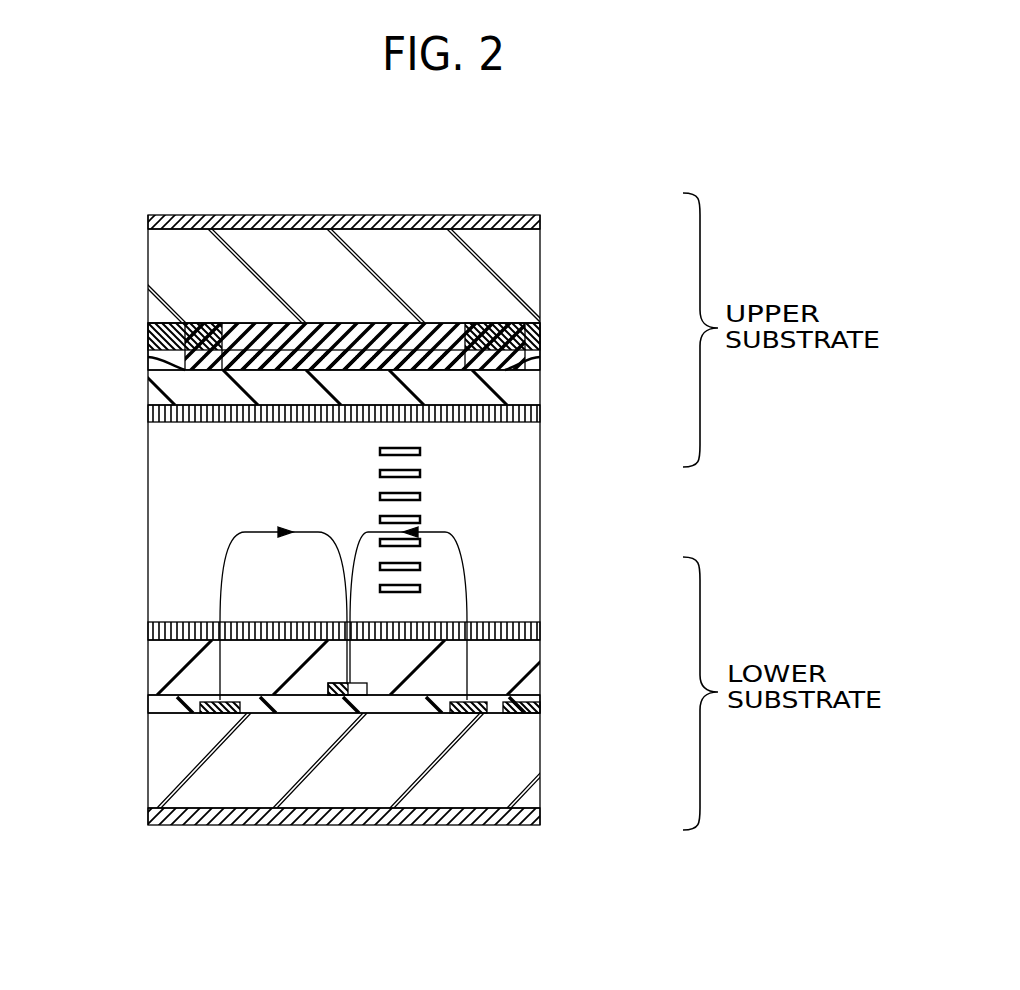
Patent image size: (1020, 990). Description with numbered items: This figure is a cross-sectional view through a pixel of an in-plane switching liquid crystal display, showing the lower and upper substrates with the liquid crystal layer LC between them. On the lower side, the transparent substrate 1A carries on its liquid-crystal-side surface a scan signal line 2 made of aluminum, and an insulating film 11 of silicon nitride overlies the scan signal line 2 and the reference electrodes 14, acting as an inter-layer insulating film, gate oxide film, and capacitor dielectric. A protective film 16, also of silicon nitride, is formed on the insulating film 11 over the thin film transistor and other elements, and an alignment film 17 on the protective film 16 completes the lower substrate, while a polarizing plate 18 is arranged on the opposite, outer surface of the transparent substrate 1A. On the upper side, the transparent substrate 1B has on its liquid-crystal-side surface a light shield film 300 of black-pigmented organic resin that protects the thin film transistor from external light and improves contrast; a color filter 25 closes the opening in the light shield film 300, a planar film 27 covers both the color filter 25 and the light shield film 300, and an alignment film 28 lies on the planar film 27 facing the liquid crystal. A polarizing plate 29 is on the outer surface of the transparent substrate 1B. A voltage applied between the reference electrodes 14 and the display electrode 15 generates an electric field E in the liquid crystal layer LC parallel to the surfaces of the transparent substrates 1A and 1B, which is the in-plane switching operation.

The polarizing plate 29 is at (190, 214).
The color filter 25 is at (440, 330).
The transparent substrate 1B is at (540, 259).
The light shield film 300 is at (147, 345).
The planar film 27 is at (540, 383).
The alignment film 28 is at (540, 433).
The liquid crystal layer LC is at (540, 500).
The electric field E is at (414, 531).
The alignment film 17 is at (540, 605).
The protective film 16 is at (540, 650).
The scan signal line 2 is at (540, 700).
The insulating film 11 is at (165, 703).
The reference electrodes 14 is at (220, 713).
The display electrode 15 is at (368, 697).
The transparent substrate 1A is at (540, 765).
The polarizing plate 18 is at (525, 820).